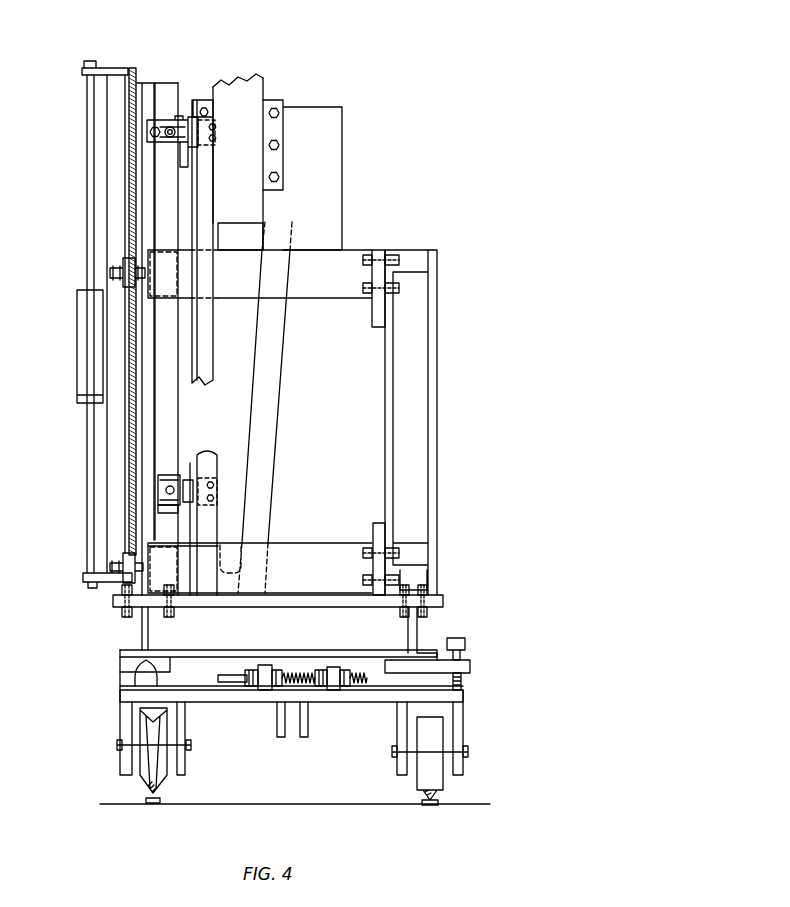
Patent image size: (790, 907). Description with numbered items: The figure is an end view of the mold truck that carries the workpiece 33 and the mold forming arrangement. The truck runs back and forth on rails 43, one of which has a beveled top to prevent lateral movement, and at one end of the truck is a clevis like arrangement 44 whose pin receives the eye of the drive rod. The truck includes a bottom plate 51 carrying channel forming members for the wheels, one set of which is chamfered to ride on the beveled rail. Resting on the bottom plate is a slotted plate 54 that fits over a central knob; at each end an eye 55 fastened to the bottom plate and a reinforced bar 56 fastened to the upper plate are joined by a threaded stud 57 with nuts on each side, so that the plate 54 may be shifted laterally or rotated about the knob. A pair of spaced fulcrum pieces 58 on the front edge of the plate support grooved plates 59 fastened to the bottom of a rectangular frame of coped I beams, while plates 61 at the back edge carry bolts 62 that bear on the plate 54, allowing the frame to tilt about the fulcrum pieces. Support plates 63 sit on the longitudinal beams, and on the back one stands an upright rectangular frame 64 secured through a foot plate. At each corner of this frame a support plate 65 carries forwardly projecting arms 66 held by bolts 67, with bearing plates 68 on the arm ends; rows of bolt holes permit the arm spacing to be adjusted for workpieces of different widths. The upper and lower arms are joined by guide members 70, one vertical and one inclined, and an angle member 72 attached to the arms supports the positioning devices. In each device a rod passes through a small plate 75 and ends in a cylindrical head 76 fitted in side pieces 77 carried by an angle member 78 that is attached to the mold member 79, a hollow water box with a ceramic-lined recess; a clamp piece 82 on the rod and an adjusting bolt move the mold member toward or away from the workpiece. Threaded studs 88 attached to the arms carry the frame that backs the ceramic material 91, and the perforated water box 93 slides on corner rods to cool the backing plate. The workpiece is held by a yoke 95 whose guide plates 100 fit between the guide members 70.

The workpiece 33 is at (342, 166).
The rails 43 is at (422, 797).
The clevis like arrangement 44 is at (276, 738).
The bottom plate 51 is at (385, 702).
The plate 54 is at (212, 692).
The eye 55 is at (333, 691).
The bar 56 is at (265, 665).
The threaded stud 57 is at (298, 672).
The fulcrum pieces 58 is at (126, 676).
The grooved plates 59 is at (120, 662).
The plates 61 is at (470, 667).
The bolts 62 is at (466, 656).
The support plates 63 is at (113, 600).
The rectangular frame 64 is at (437, 396).
The support plate 65 is at (385, 255).
The arms 66 is at (347, 249).
The bolts 67 is at (366, 293).
The bearing plates 68 is at (373, 252).
The guide members 70 is at (215, 412).
The angle member 72 is at (213, 201).
The small plate 75 is at (200, 135).
The cylindrical head 76 is at (167, 475).
The side pieces 77 is at (158, 509).
The angle member 78 is at (160, 88).
The mold member 79 is at (145, 90).
The clamp piece 82 is at (165, 120).
The threaded stud 88 is at (117, 272).
The ceramic material 91 is at (132, 70).
The water box 93 is at (78, 336).
The yoke 95 is at (268, 84).
The guide plates 100 is at (263, 240).